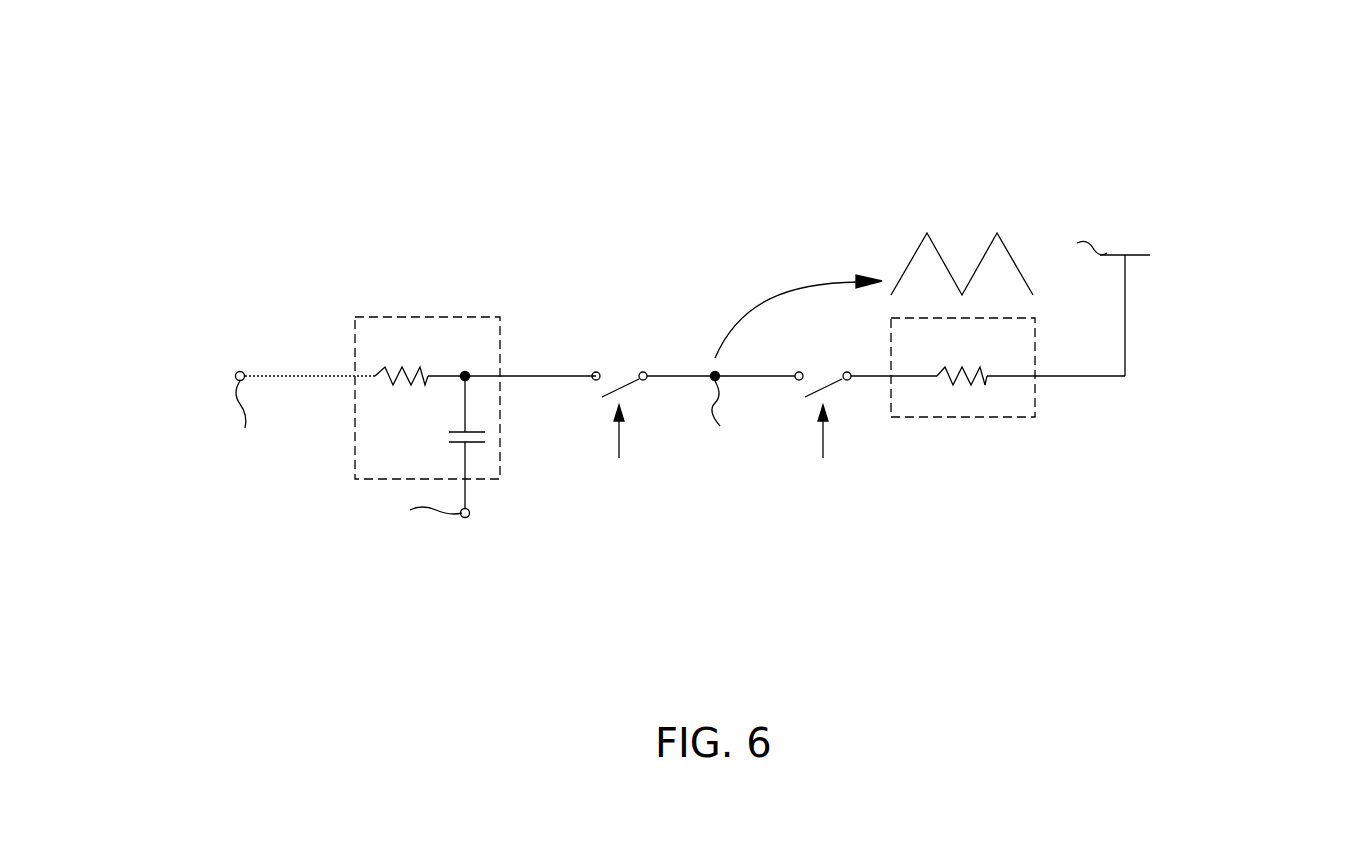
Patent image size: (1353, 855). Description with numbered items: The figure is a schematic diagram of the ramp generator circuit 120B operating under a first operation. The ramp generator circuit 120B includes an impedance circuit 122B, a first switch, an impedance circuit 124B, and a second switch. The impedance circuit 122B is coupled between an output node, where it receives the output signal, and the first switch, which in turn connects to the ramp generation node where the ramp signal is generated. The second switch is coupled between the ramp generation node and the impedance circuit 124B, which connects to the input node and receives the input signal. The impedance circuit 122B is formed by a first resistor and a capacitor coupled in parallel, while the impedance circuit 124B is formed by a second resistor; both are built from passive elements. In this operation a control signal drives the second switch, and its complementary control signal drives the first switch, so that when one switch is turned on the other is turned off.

The ramp generator circuit 120B is at (1278, 91).
The impedance circuit 122B is at (412, 317).
The impedance circuit 124B is at (945, 417).